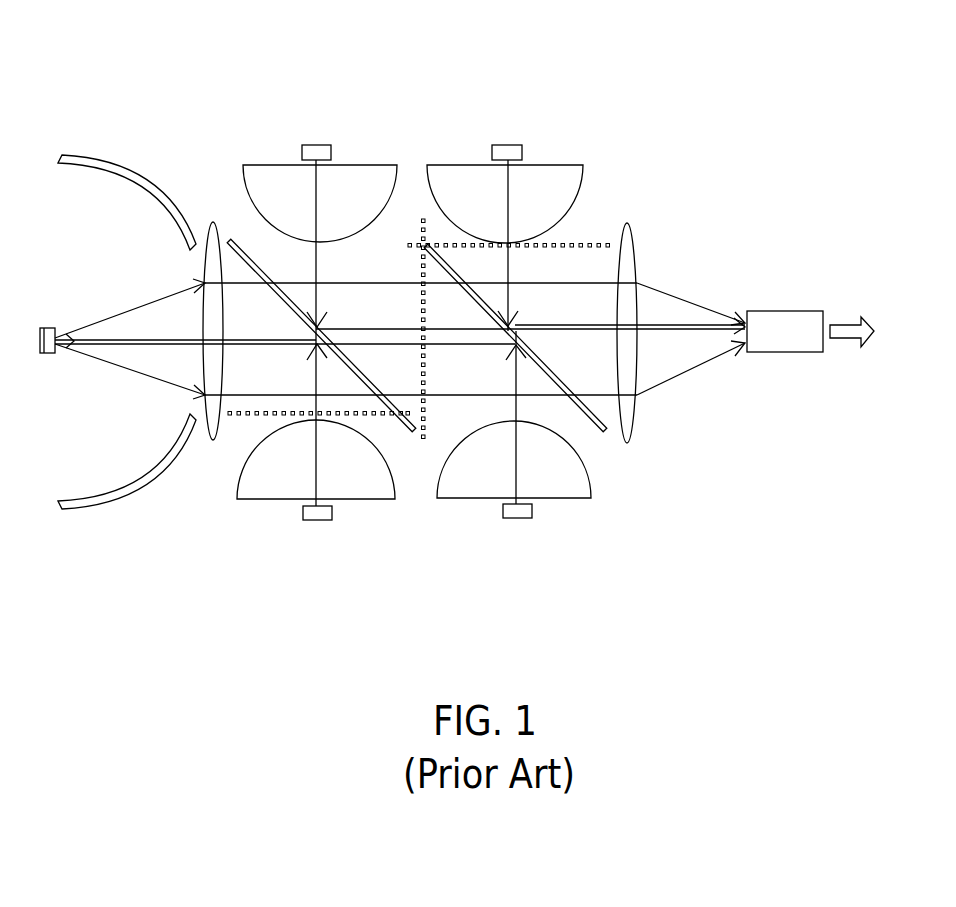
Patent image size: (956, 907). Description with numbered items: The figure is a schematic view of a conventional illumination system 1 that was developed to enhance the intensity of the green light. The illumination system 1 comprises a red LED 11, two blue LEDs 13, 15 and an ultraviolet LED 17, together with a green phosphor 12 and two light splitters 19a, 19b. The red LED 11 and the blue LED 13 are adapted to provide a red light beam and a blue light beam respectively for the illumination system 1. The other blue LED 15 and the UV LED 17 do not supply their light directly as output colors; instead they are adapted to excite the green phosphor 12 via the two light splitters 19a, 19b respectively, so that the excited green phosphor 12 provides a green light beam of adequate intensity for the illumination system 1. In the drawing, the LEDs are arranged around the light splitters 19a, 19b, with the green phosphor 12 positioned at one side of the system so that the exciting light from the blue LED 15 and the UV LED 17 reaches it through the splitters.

The illumination system 1 is at (208, 37).
The red LED 11 is at (271, 176).
The green phosphor 12 is at (44, 327).
The blue LED 13 is at (452, 176).
The blue LED 15 is at (571, 488).
The ultraviolet (UV) LED 17 is at (278, 486).
The light splitter 19a is at (604, 436).
The light splitter 19b is at (408, 437).